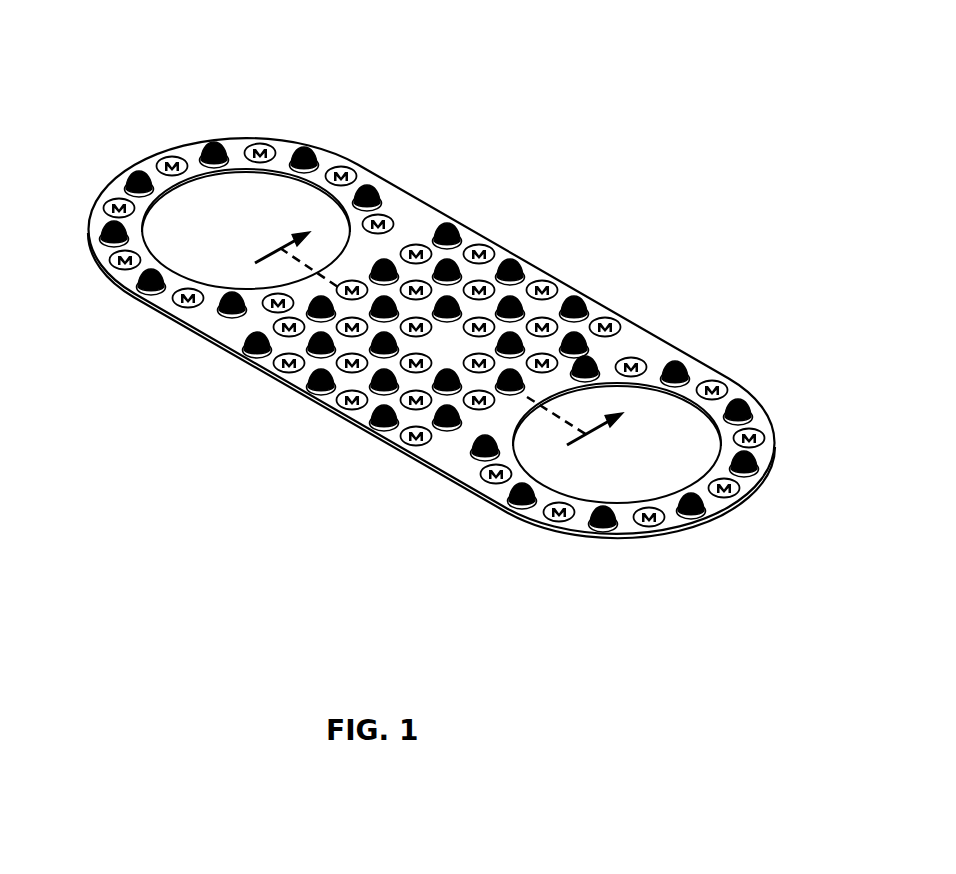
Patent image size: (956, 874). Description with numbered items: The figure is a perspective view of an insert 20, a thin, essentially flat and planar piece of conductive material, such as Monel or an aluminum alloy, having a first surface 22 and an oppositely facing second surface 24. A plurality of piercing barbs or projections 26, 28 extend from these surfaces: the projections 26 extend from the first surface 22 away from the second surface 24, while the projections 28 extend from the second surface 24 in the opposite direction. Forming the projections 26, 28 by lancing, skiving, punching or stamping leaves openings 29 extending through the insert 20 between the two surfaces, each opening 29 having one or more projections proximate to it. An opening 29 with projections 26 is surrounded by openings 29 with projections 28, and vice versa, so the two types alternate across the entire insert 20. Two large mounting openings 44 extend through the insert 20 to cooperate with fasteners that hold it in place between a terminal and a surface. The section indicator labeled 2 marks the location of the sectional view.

The insert 20 is at (431, 344).
The first surface 22 is at (662, 353).
The second surface 24 is at (578, 540).
The projections 26 is at (217, 140).
The projections 28 is at (416, 412).
The openings 29 is at (477, 250).
The mounting openings 44 is at (220, 220).
The section line 2- 2 is at (447, 328).